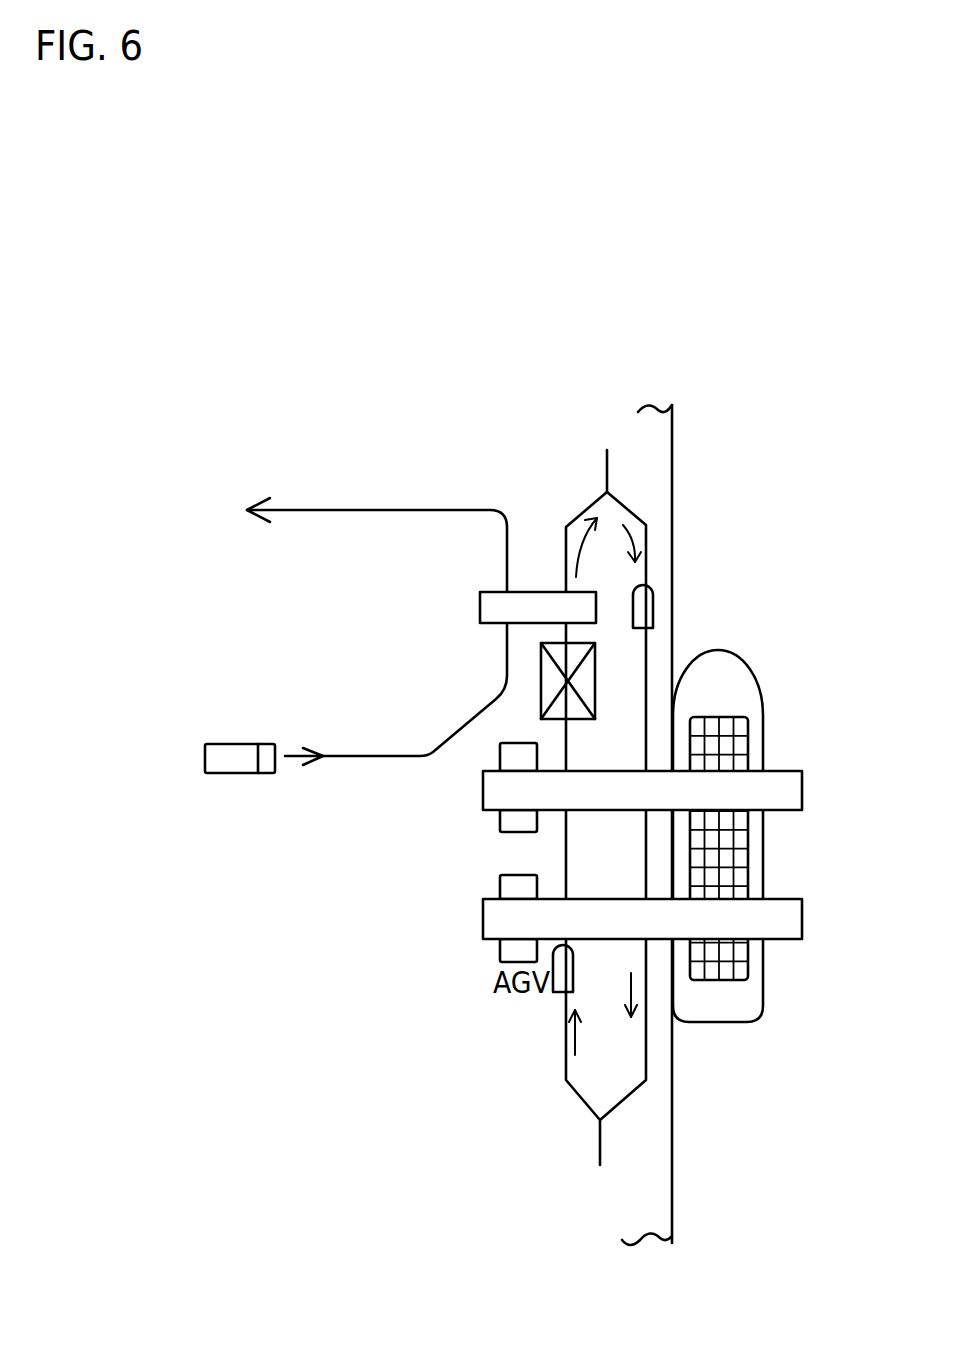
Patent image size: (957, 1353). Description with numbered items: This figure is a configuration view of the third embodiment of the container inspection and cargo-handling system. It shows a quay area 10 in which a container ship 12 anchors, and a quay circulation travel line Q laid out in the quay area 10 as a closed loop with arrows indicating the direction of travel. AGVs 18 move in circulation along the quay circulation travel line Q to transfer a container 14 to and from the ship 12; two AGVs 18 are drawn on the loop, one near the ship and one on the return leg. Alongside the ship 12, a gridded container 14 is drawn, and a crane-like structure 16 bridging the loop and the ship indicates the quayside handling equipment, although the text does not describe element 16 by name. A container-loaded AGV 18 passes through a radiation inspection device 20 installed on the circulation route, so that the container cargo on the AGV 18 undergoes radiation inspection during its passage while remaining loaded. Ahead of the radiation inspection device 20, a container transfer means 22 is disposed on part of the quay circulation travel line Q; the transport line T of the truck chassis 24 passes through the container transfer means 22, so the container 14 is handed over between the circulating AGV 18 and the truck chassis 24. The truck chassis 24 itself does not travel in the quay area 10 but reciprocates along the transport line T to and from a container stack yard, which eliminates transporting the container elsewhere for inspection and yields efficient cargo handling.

The quay area 10 is at (635, 1170).
The container ship 12 is at (763, 700).
The container 14 is at (747, 857).
The conveyor 16 is at (802, 790).
The AGV 18 is at (653, 600).
The radiation inspection device 20 is at (597, 680).
The container transfer means 22 is at (478, 610).
The truck chassis 24 is at (222, 743).
The transport line T is at (388, 510).
The quay circulation travel line Q is at (562, 1073).